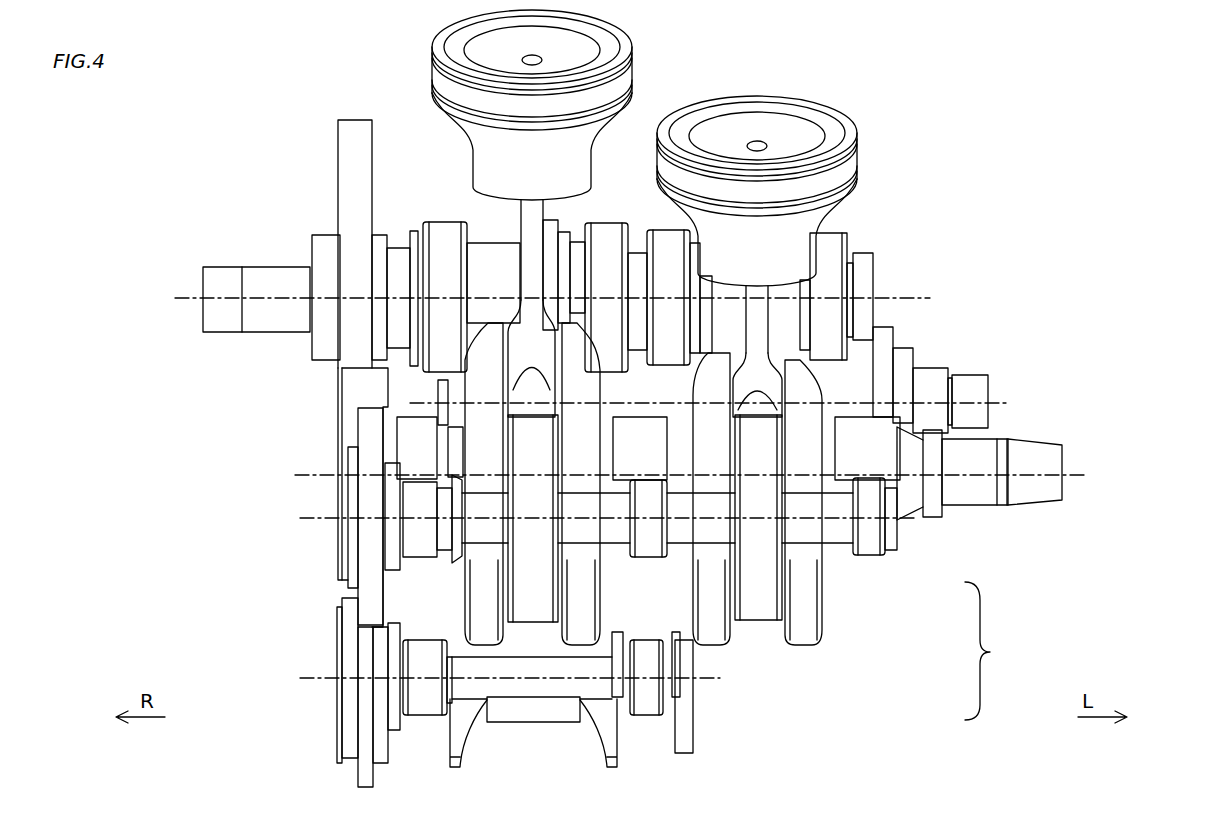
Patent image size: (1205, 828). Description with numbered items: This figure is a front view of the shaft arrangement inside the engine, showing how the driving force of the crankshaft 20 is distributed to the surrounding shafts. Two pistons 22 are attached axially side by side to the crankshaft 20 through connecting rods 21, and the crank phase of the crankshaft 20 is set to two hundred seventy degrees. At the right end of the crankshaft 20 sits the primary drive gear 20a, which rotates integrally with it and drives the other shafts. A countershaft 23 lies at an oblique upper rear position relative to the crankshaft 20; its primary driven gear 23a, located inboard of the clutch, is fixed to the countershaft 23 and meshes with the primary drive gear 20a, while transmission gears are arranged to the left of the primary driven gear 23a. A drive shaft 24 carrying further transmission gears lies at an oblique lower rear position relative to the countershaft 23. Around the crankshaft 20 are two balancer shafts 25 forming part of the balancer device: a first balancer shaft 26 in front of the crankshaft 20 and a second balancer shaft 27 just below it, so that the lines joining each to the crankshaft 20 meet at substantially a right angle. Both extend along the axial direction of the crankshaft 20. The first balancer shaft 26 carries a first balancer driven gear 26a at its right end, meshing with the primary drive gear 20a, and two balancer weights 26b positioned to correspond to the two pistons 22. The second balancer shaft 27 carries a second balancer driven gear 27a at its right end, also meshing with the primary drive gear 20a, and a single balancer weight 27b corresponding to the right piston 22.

The crankshaft 20 is at (1033, 455).
The primary drive gear 20a is at (358, 390).
The connecting rod 21 is at (528, 220).
The piston 22 is at (570, 50).
The countershaft 23 is at (265, 273).
The primary driven gear 23a is at (353, 130).
The drive shaft 24 is at (975, 392).
The balancer shafts 25 is at (991, 651).
The first balancer shaft 26 is at (870, 540).
The first balancer driven gear 26a is at (372, 503).
The balancer weight 26b is at (533, 560).
The second balancer shaft 27 is at (648, 697).
The second balancer driven gear 27a is at (358, 655).
The balancer weight 27b is at (537, 707).